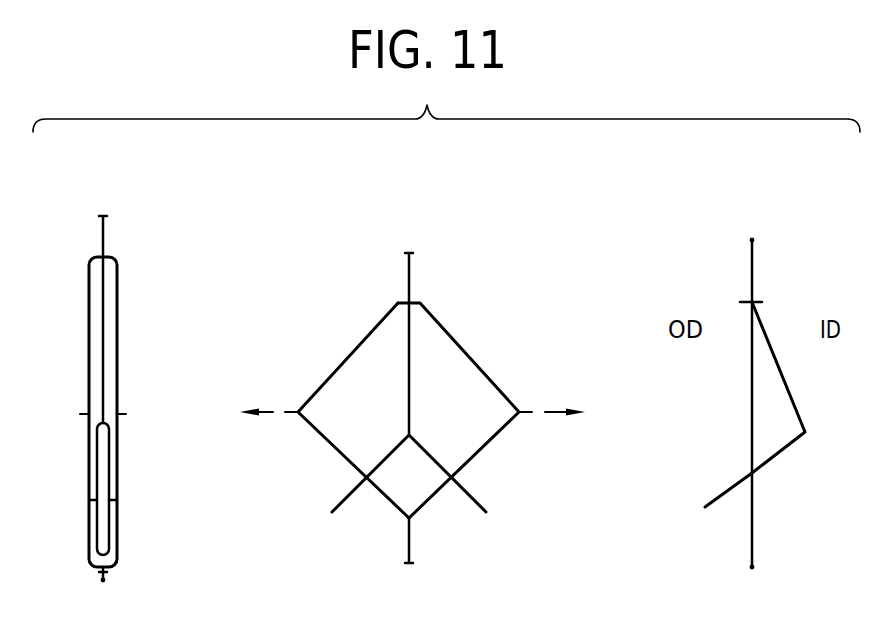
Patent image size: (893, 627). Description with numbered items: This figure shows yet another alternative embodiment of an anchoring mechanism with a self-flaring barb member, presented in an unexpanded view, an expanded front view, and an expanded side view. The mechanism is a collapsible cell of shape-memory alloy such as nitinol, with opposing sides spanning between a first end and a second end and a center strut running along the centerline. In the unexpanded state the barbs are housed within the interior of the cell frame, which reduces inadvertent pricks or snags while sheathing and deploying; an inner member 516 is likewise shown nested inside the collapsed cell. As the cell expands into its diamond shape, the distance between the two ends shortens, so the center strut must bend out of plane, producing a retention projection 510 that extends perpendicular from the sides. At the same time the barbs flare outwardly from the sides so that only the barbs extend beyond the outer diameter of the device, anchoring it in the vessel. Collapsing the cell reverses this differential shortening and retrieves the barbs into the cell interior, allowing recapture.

The retention projection 510 is at (782, 411).
The inner tube 516 is at (97, 537).